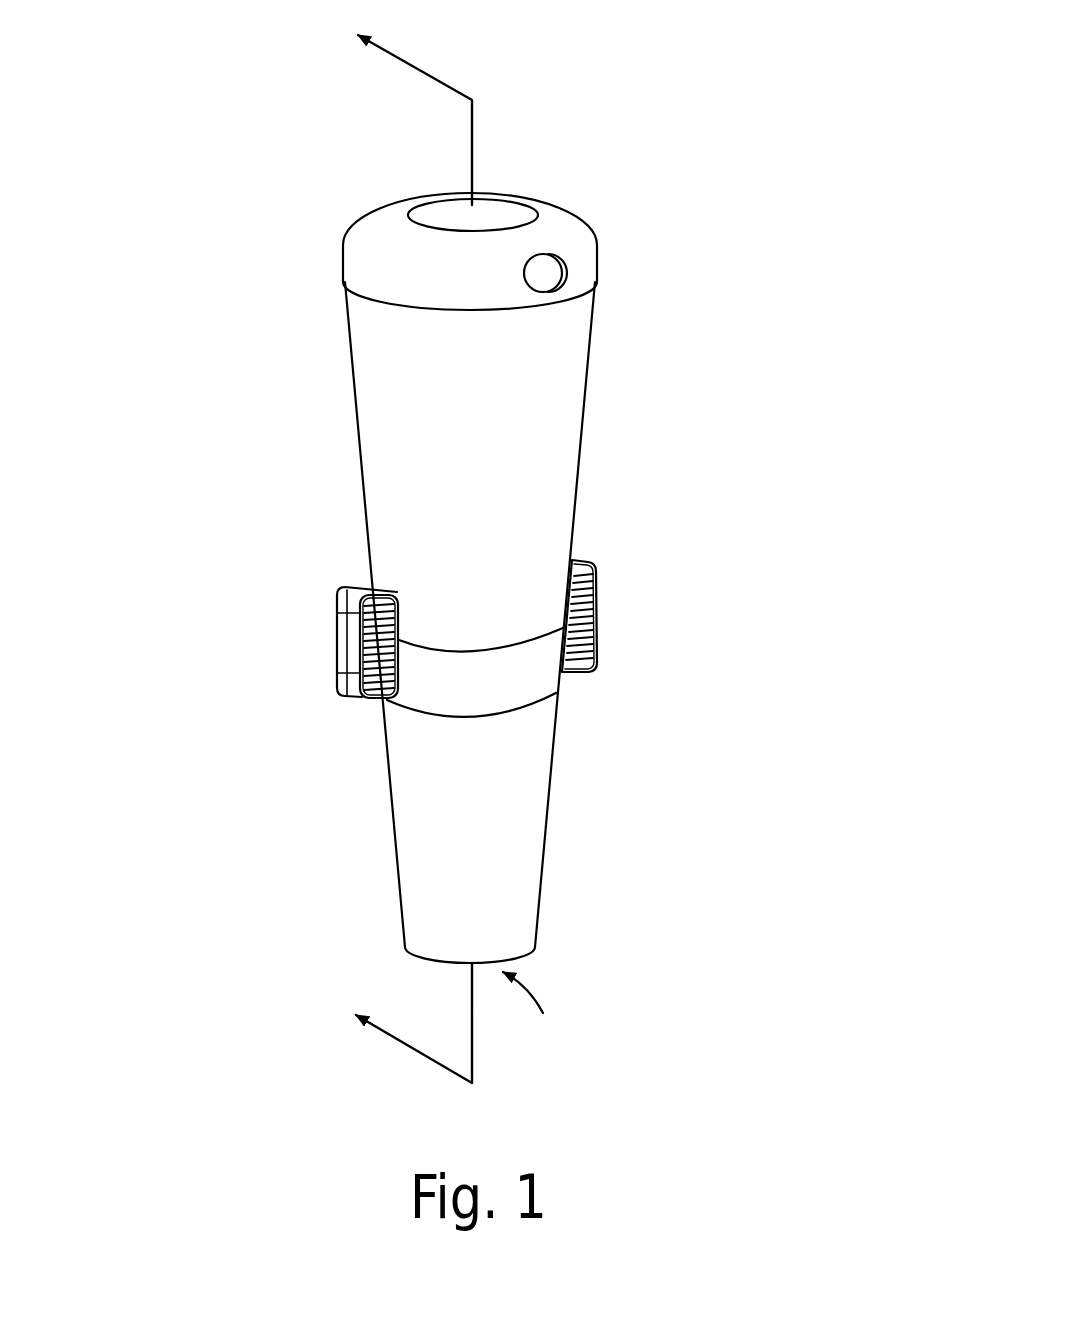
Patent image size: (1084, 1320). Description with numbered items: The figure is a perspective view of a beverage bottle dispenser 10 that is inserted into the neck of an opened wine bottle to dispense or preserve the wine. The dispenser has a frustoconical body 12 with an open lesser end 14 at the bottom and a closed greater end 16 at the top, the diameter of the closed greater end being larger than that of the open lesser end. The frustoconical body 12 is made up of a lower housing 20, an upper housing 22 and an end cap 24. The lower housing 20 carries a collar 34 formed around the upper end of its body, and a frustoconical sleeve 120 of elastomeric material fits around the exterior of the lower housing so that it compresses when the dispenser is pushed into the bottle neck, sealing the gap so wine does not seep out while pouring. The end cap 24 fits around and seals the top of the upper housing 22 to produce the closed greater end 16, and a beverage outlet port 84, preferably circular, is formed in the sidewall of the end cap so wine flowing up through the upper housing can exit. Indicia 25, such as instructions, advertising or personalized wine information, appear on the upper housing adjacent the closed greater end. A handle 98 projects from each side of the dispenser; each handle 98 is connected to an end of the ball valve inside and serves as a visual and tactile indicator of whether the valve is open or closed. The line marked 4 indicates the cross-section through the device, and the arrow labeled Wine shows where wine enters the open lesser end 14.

The section line 4- 4 is at (411, 543).
The beverage bottle dispenser 10 is at (692, 128).
The frustoconical body 12 is at (356, 430).
The open lesser end 14 is at (430, 963).
The closed greater end 16 is at (547, 199).
The lower housing 20 is at (420, 799).
The upper housing 22 is at (545, 448).
The end cap 24 is at (570, 228).
The indicia 25 is at (378, 349).
The collar 34 is at (528, 682).
The beverage outlet port 84 is at (545, 275).
The handle 98 is at (340, 643).
The frustoconical sleeve 120 is at (511, 856).